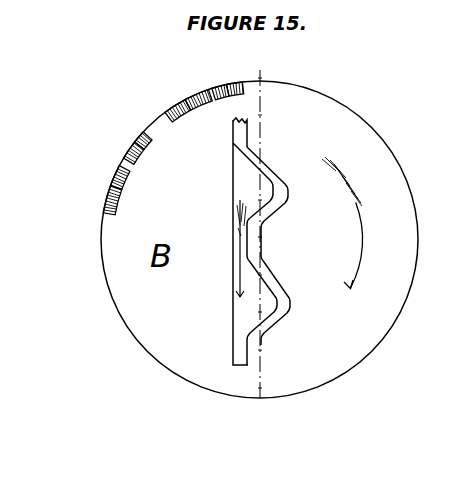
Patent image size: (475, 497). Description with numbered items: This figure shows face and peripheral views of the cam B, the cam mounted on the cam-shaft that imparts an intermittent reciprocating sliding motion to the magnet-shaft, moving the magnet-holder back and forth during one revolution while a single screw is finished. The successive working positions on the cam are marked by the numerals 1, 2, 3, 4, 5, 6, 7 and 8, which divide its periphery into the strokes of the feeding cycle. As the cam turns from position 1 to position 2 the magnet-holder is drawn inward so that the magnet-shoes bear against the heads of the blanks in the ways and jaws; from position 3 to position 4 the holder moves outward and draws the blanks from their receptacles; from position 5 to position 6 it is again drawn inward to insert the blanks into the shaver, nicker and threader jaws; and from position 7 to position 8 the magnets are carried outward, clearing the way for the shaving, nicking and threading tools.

The cam position one 1 is at (242, 80).
The cam position two 2 is at (227, 133).
The cam position three 3 is at (218, 130).
The cam position four 4 is at (200, 163).
The cam position five 5 is at (187, 173).
The cam position six 6 is at (175, 182).
The cam position seven 7 is at (170, 192).
The cam position eight 8 is at (157, 220).